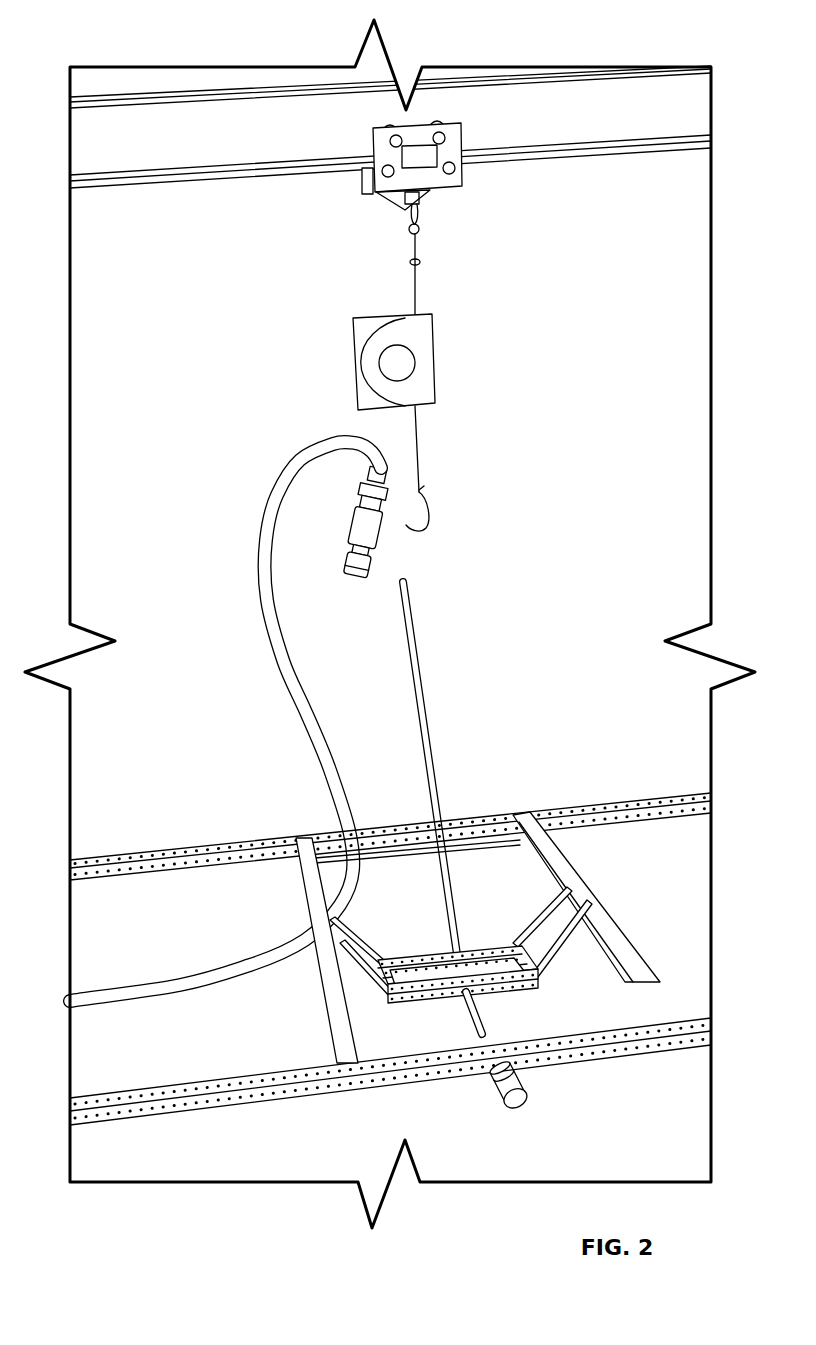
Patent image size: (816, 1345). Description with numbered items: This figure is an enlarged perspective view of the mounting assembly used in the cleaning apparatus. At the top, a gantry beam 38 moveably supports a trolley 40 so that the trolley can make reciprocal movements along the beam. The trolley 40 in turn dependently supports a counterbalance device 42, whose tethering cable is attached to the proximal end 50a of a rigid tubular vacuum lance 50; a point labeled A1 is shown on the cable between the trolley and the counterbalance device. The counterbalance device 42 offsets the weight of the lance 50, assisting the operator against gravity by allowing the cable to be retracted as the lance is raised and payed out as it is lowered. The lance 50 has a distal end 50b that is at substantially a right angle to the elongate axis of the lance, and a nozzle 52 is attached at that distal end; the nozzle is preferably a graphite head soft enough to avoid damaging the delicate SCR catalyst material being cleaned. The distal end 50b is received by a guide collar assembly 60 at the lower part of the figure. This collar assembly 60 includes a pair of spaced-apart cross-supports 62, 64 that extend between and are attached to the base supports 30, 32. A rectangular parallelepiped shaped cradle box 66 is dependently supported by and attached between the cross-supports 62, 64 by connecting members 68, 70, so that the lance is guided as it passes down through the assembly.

The base support 30 is at (193, 852).
The base support 32 is at (262, 1100).
The gantry beam 38 is at (237, 118).
The trolley 40 is at (455, 180).
The counterbalance device 42 is at (423, 343).
The rigid tubular vacuum lance 50 is at (434, 684).
The proximal end 50a is at (372, 530).
The distal end 50b is at (480, 1020).
The nozzle 52 is at (520, 1085).
The guide collar assembly 60 is at (486, 866).
The cross-support 62 is at (562, 865).
The cross-support 64 is at (308, 890).
The cradle box 66 is at (418, 957).
The connecting member 68 is at (562, 940).
The connecting member 70 is at (358, 975).
The attachment point A1 is at (411, 262).